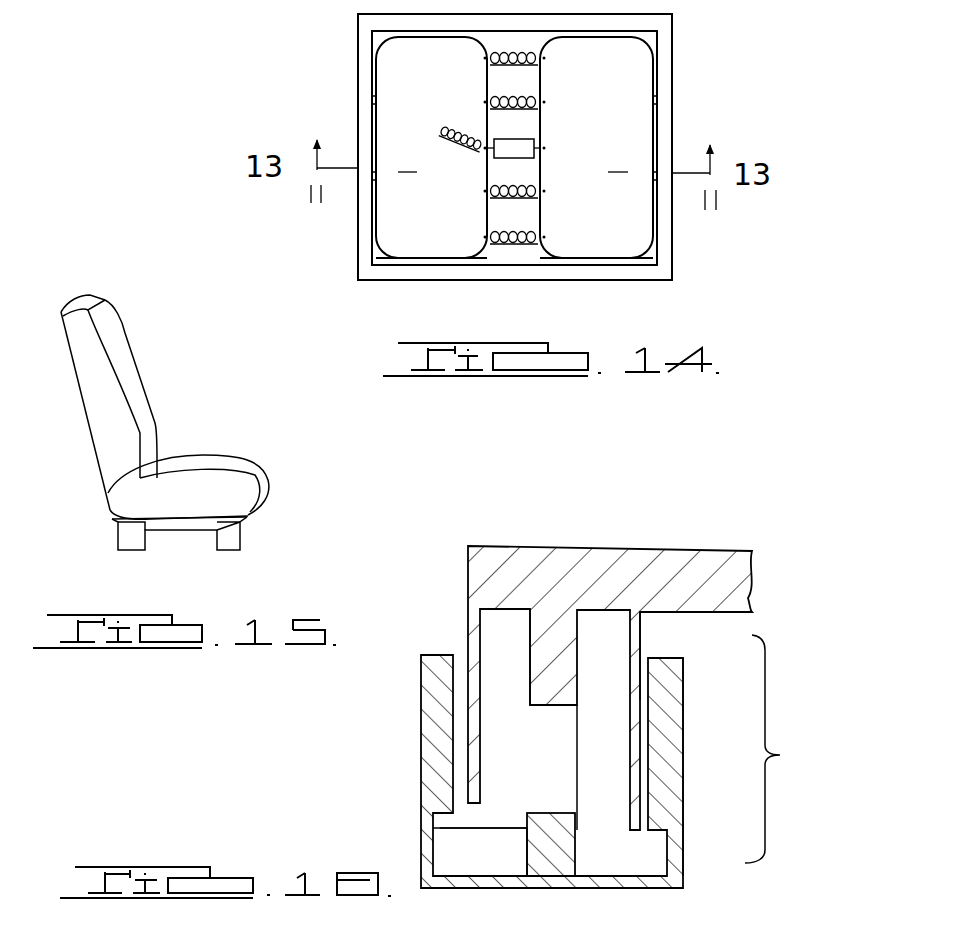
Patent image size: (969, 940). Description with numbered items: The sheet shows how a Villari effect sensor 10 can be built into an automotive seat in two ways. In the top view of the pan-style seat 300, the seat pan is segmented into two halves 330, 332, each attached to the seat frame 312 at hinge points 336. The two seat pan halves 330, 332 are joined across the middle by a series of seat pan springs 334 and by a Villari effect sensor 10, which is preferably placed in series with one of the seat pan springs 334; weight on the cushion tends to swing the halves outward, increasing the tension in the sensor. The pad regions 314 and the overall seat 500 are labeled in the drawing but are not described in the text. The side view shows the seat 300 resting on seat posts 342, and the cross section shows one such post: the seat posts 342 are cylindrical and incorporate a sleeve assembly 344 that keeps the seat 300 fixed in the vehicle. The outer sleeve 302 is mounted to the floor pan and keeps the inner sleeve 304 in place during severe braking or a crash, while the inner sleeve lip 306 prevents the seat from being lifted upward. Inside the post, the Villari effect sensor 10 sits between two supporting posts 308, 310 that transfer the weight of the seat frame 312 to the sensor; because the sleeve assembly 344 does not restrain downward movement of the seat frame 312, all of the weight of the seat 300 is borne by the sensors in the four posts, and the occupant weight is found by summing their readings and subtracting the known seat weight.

In FIG. 14, the Villari effect sensor 10 is at (548, 148).
In FIG. 16, the Villari effect sensor 10 is at (584, 754).
In FIG. 15, the pan-style seat 300 is at (152, 390).
In FIG. 16, the outer sleeve 302 is at (672, 722).
In FIG. 16, the inner sleeve 304 is at (642, 645).
In FIG. 16, the inner sleeve lip 306 is at (650, 836).
In FIG. 16, the supporting post 308 is at (528, 652).
In FIG. 16, the supporting post 310 is at (522, 840).
In FIG. 14, the seat frame 312 is at (676, 40).
In FIG. 15, the seat frame 312 is at (135, 508).
In FIG. 16, the seat frame 312 is at (754, 582).
In FIG. 14, the pad 314 is at (342, 55).
In FIG. 14, the seat pan half 330 is at (622, 258).
In FIG. 14, the seat pan half 332 is at (433, 258).
In FIG. 14, the seat pan springs 334 is at (462, 130).
In FIG. 14, the hinge points 336 is at (352, 104).
In FIG. 15, the seat posts 342 is at (210, 550).
In FIG. 16, the seat posts 342 is at (412, 838).
In FIG. 16, the sleeve assembly 344 is at (785, 749).
In FIG. 15, the seat 500 is at (276, 437).